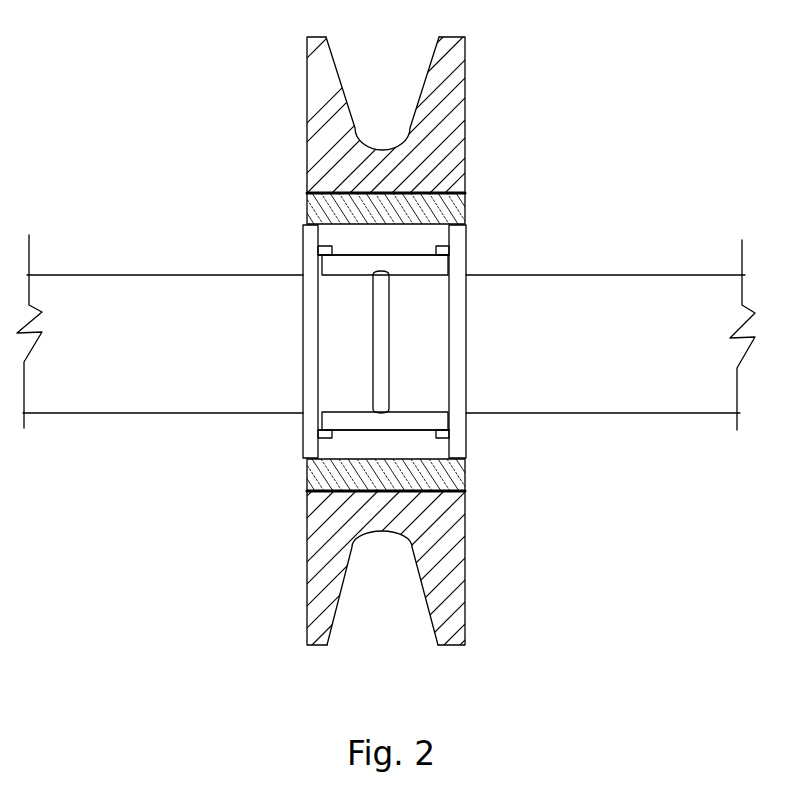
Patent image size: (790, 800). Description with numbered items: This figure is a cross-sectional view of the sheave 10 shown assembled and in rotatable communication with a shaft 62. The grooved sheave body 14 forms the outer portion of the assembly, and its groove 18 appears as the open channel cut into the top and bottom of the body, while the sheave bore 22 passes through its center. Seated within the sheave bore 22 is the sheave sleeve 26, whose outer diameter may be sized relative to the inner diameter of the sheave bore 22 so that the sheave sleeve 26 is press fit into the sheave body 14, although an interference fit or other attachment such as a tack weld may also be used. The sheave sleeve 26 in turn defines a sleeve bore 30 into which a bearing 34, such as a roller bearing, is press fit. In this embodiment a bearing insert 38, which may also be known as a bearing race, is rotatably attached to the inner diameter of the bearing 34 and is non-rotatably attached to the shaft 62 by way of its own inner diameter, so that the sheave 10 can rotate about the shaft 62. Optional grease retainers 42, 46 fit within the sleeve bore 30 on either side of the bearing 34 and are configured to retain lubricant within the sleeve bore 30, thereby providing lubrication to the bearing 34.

The sheave 10 is at (645, 166).
The sheave body 14 is at (323, 80).
The groove 18 is at (340, 63).
The sheave bore 22 is at (465, 190).
The sheave sleeve 26 is at (318, 212).
The sleeve bore 30 is at (394, 330).
The bearing 34 is at (353, 236).
The bearing insert 38 is at (353, 262).
The grease retainer 42 is at (305, 246).
The grease retainer 46 is at (462, 257).
The shaft 62 is at (626, 290).